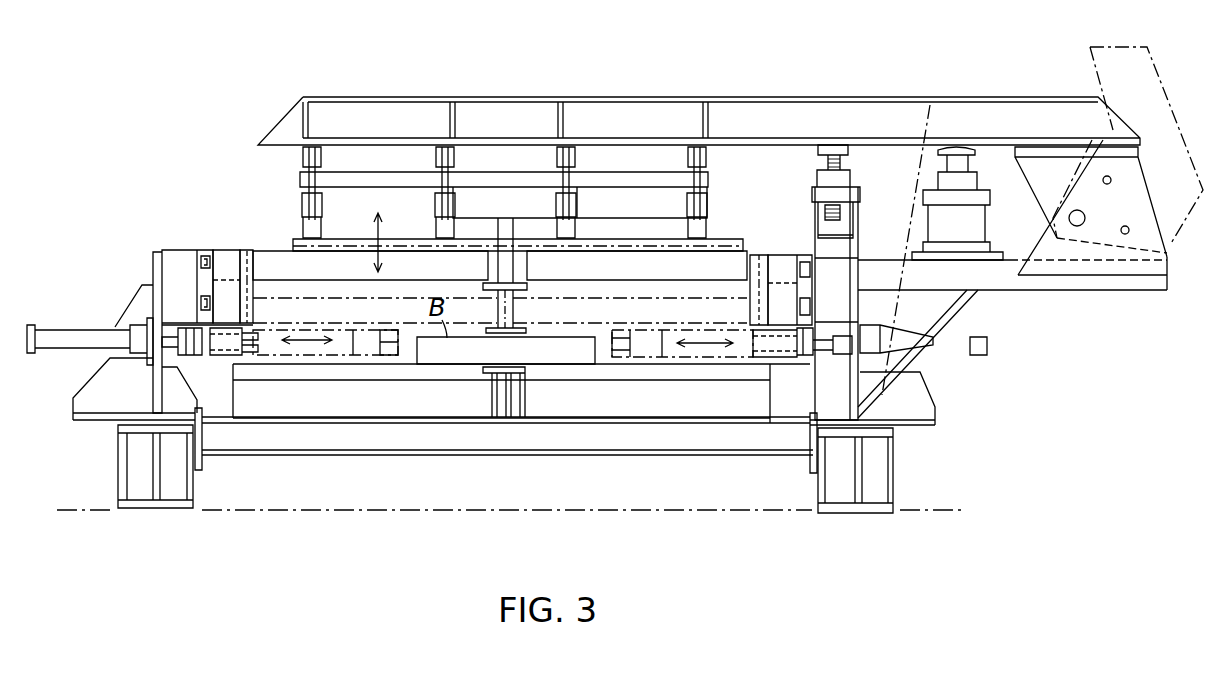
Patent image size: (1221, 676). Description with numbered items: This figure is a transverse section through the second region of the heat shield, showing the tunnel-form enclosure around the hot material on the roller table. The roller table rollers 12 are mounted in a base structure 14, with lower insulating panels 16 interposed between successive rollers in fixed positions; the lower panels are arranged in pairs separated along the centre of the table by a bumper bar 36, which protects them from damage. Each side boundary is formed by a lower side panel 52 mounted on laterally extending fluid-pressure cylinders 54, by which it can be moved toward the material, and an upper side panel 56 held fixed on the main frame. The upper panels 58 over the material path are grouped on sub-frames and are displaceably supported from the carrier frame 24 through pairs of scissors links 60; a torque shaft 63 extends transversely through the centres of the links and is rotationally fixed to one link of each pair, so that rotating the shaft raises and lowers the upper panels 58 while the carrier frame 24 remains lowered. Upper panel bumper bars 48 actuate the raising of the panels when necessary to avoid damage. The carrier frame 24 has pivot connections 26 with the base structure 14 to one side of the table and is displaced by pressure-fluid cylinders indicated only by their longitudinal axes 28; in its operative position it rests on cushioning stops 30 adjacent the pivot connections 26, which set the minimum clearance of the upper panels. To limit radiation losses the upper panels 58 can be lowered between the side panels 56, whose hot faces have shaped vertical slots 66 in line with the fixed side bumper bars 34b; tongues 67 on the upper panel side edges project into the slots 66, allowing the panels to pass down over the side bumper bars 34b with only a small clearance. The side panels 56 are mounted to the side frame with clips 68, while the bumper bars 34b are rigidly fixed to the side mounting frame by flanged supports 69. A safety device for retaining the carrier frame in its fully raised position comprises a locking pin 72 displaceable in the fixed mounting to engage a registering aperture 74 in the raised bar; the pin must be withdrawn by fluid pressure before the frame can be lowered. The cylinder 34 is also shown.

The roller table rollers 12 is at (447, 373).
The base structure 14 is at (904, 504).
The lower insulating panels 16 is at (360, 403).
The carrier frame 24 is at (400, 118).
The pivot connections 26 is at (1078, 227).
The longitudinal axes of pressure-fluid cylinders 28 is at (905, 172).
The cushioning stops 30 is at (945, 215).
The hydraulic cylinder 34 is at (762, 357).
The fixed side bumper bars 34b is at (245, 292).
The bumper bar 36 is at (523, 377).
The bumper bars 48 is at (527, 288).
The lower side panel 52 is at (223, 355).
The fluid-pressure cylinders 54 is at (80, 340).
The upper side panel 56 is at (217, 255).
The upper panels 58 is at (402, 270).
The scissors links 60 is at (707, 168).
The torque shaft 63 is at (520, 180).
The vertical slots 66 is at (238, 253).
The tongues 67 is at (253, 252).
The clips 68 is at (205, 253).
The flanged supports 69 is at (207, 292).
The locking pin 72 is at (1126, 234).
The registering aperture 74 is at (1110, 178).